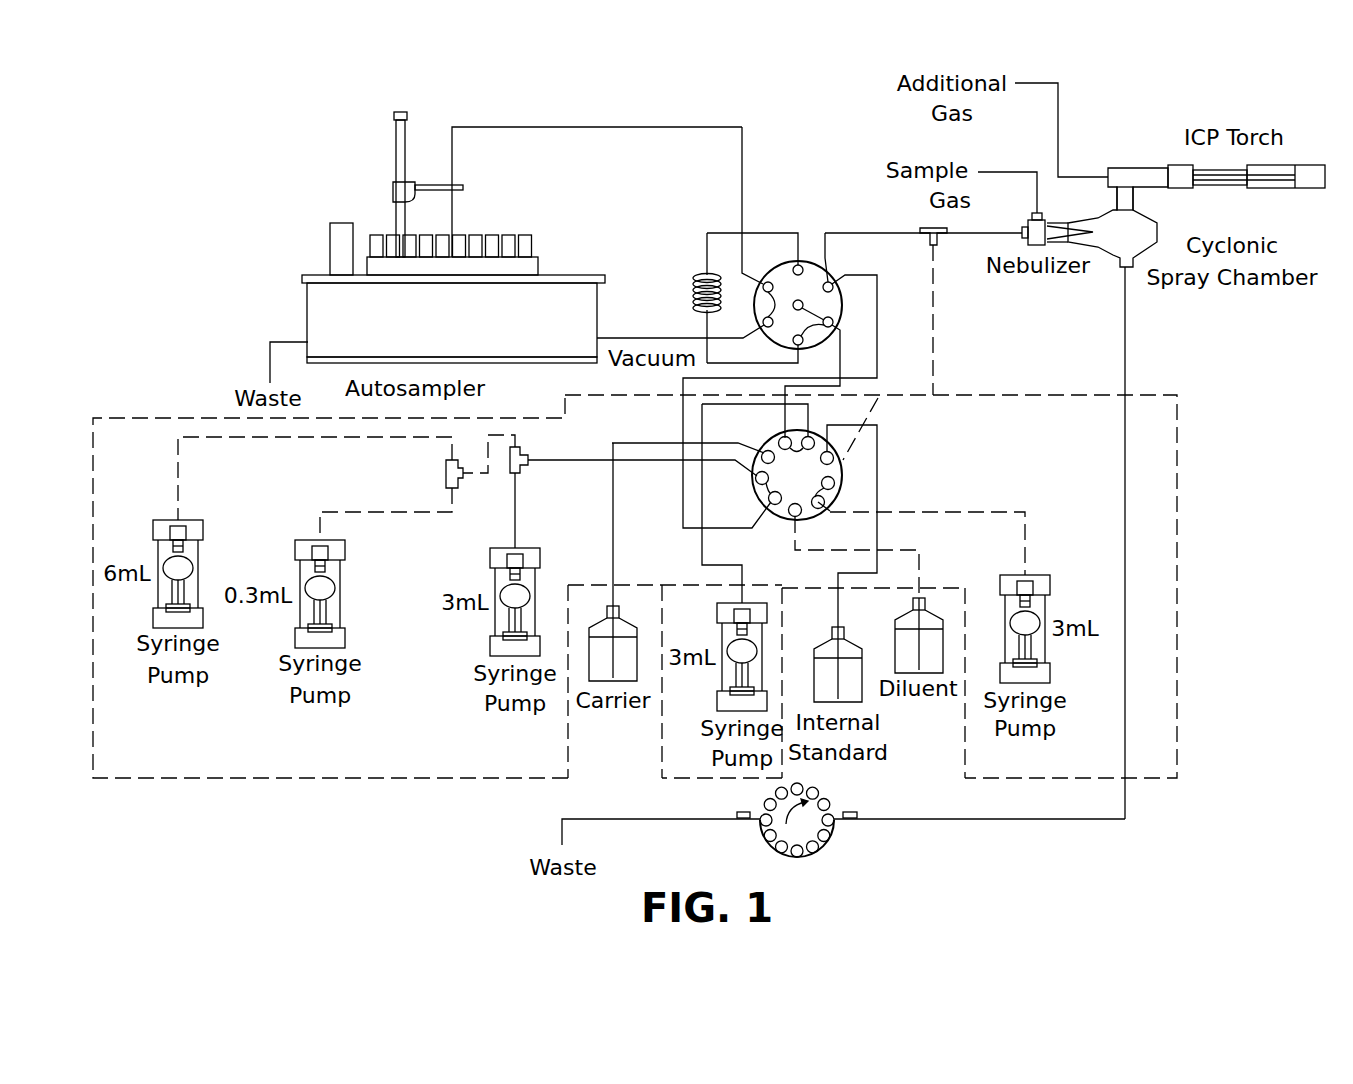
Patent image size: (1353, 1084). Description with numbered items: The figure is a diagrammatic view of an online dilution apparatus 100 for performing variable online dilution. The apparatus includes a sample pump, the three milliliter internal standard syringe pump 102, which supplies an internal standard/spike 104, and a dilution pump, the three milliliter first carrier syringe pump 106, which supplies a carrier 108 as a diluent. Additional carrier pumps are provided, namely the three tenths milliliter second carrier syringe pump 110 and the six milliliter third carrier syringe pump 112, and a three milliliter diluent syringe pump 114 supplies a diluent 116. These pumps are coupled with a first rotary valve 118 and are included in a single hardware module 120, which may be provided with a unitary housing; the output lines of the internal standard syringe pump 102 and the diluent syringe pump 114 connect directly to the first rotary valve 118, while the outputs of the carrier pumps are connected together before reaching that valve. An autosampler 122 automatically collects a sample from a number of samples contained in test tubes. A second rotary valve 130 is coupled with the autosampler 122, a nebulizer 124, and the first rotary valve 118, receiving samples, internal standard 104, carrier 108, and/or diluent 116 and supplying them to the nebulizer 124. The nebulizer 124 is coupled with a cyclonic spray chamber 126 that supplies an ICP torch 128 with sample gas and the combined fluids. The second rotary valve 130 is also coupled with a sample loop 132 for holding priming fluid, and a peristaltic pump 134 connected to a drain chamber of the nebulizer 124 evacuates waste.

The online dilution apparatus 100 is at (1235, 334).
The internal standard syringe pump 102 is at (720, 602).
The internal standard/spike 104 is at (820, 641).
The first carrier syringe pump 106 is at (535, 547).
The carrier 108 is at (600, 625).
The second carrier syringe pump 110 is at (300, 539).
The third carrier syringe pump 112 is at (198, 519).
The diluent syringe pump 114 is at (1045, 574).
The diluent 116 is at (894, 646).
The first rotary valve 118 is at (836, 499).
The hardware module 120 is at (1153, 393).
The autosampler 122 is at (570, 274).
The nebulizer 124 is at (1155, 166).
The cyclonic spray chamber 126 is at (1158, 238).
The ICP torch 128 is at (1308, 190).
The second rotary valve 130 is at (800, 300).
The sample loop 132 is at (703, 254).
The peristaltic pump 134 is at (816, 848).